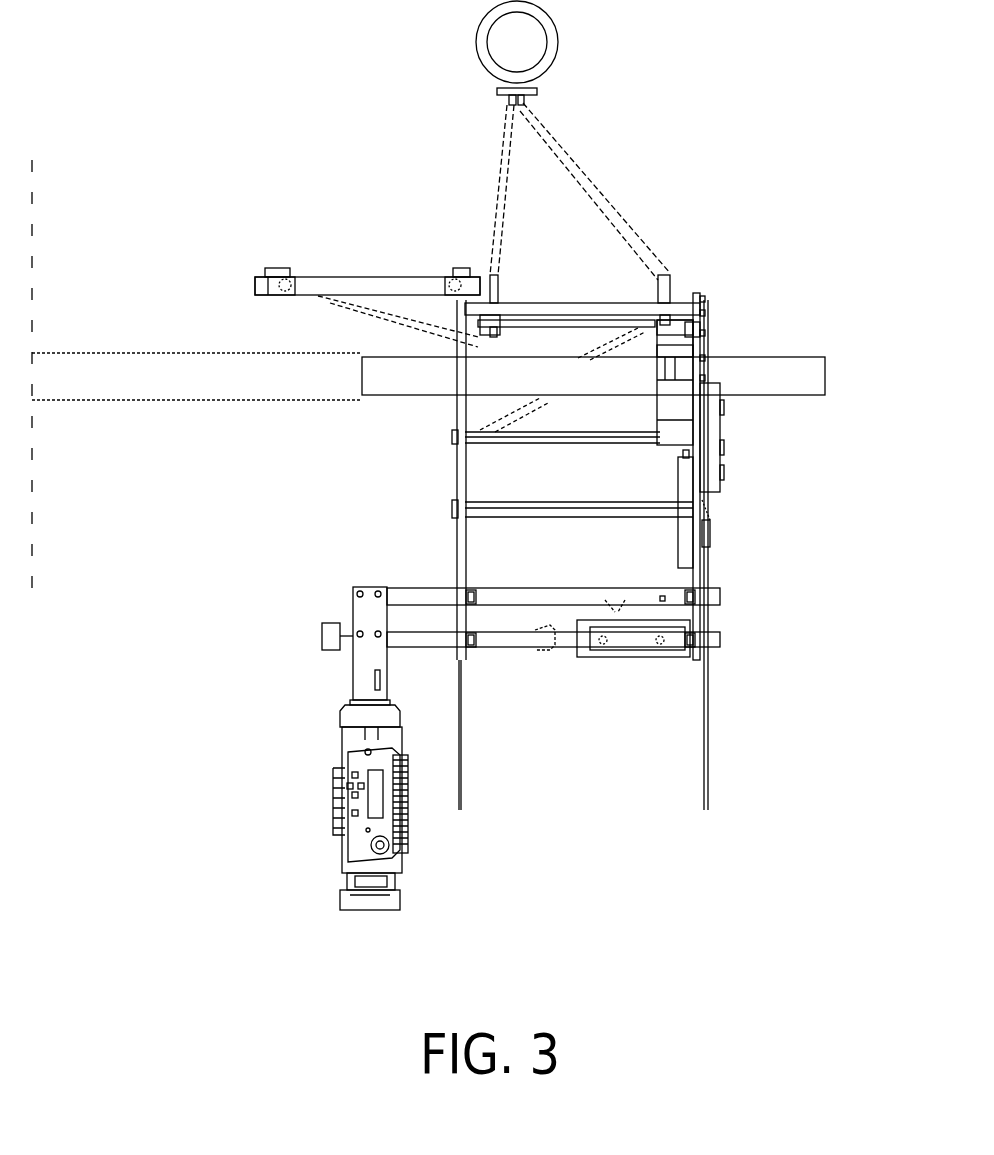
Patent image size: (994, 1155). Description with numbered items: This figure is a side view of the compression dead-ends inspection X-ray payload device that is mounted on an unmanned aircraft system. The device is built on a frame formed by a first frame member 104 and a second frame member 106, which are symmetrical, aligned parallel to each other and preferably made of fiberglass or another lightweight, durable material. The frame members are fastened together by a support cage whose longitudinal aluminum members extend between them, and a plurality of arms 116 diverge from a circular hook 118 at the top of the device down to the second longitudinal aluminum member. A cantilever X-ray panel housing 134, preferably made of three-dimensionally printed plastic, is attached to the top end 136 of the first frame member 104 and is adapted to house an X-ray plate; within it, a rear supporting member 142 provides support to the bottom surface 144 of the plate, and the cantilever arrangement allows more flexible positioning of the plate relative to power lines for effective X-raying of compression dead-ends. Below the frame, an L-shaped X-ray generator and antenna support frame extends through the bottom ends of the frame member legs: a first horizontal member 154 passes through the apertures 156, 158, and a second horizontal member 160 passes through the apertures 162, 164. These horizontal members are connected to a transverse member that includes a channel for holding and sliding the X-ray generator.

The first frame member 104 is at (465, 473).
The second frame member 106 is at (695, 500).
The arms 116 is at (503, 120).
The circular hook 118 is at (478, 50).
The cantilever X-ray panel housing 134 is at (378, 285).
The top end 136 is at (455, 292).
The rear supporting member 142 is at (400, 307).
The bottom surface 144 is at (420, 290).
The first horizontal member 154 is at (590, 590).
The aperture 156 is at (700, 597).
The aperture 158 is at (450, 590).
The second horizontal member 160 is at (498, 630).
The aperture 162 is at (700, 638).
The aperture 164 is at (450, 635).